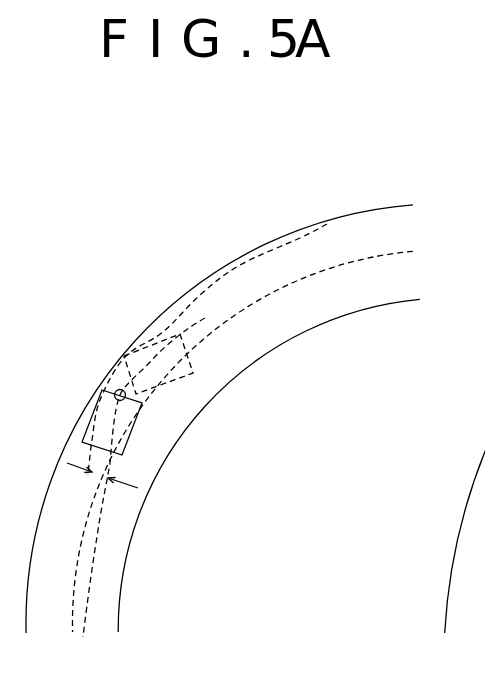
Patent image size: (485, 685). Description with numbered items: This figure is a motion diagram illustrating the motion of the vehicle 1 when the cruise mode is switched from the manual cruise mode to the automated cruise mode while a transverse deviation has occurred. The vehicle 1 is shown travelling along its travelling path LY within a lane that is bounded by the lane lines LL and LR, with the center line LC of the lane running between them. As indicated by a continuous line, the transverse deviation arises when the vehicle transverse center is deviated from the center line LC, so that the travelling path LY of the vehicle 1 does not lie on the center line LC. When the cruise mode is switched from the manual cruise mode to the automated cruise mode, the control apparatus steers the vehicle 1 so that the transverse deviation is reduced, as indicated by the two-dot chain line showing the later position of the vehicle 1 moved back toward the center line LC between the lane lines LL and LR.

The vehicle 1 is at (135, 341).
The left lane line LL is at (365, 207).
The right lane line LR is at (389, 302).
The center line LC is at (412, 252).
The travelling path LY is at (290, 229).